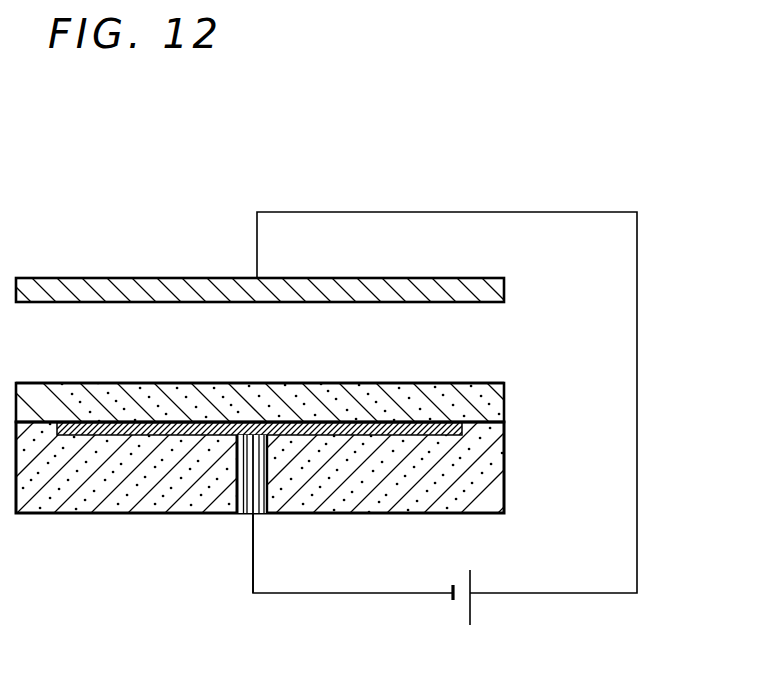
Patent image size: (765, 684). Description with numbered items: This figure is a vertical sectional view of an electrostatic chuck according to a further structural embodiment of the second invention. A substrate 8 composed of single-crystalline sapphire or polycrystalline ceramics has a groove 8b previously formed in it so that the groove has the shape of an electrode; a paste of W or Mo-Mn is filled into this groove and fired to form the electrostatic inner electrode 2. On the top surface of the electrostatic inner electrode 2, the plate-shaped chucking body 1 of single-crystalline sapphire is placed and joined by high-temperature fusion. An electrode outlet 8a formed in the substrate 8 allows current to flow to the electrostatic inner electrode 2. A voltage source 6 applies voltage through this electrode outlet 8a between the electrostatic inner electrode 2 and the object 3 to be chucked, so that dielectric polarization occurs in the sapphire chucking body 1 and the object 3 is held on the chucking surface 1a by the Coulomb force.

The chucking body 1 is at (438, 385).
The chucking surface 1a is at (298, 383).
The electrostatic inner electrode 2 is at (462, 432).
The object to be chucked 3 is at (400, 280).
The power supply 6 is at (478, 600).
The substrate 8 is at (68, 503).
The electrode outlet 8a is at (245, 514).
The groove 8b is at (305, 435).